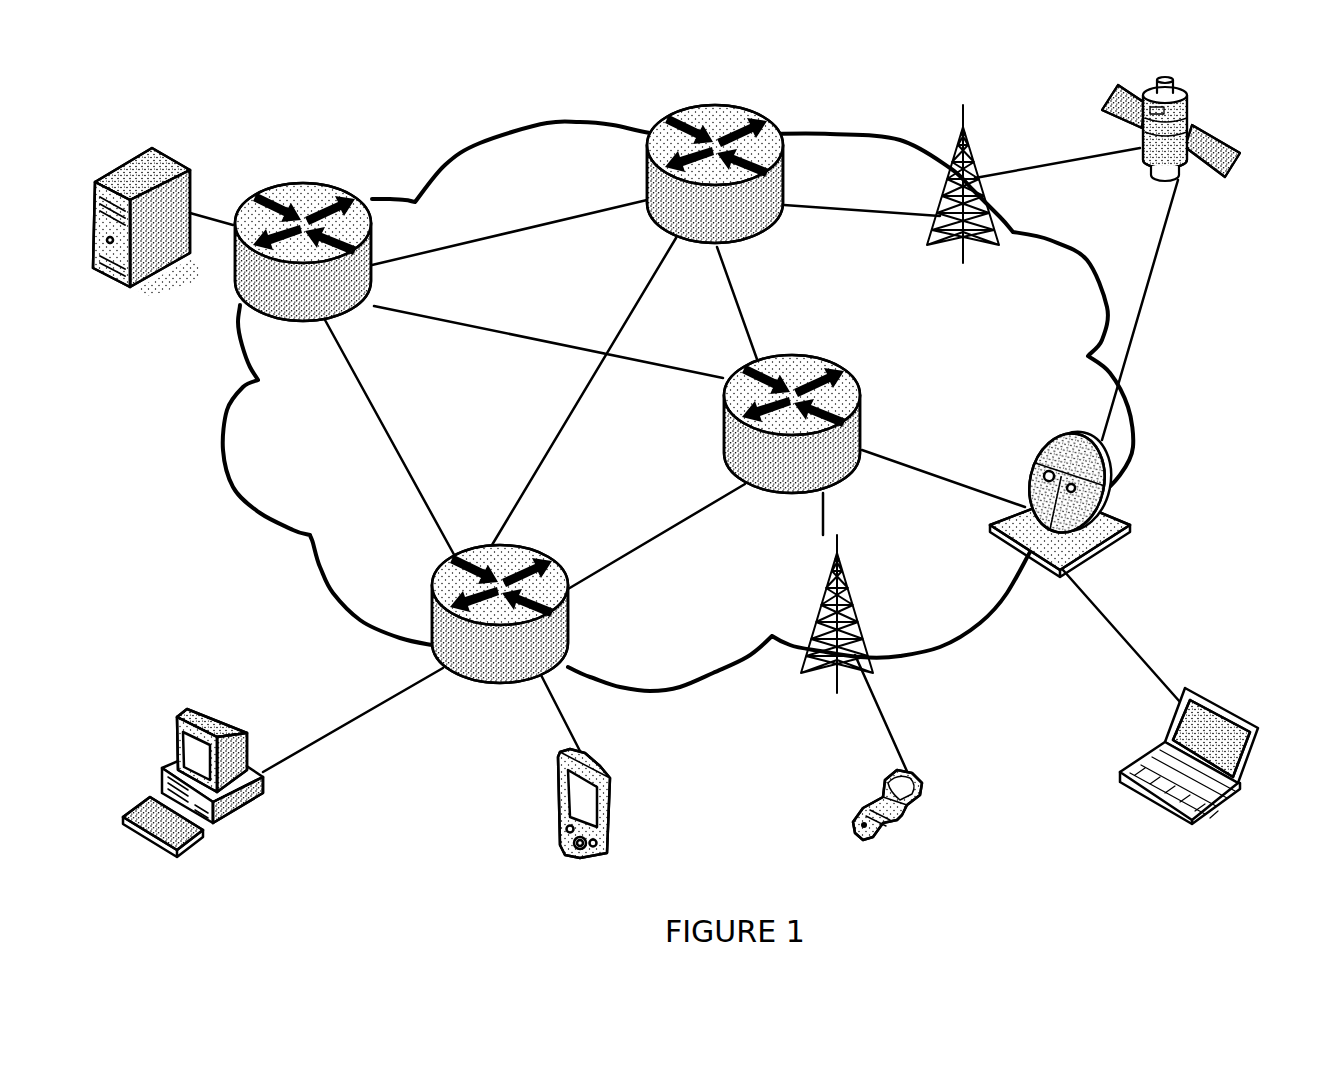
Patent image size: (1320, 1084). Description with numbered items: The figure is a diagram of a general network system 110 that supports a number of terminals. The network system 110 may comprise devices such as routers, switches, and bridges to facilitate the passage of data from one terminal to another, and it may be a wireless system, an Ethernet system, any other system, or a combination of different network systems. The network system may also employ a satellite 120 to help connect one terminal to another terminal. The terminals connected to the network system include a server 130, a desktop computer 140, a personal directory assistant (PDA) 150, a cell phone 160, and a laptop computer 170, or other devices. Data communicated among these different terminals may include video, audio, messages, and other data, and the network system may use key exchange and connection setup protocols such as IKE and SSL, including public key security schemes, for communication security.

The network system 110 is at (490, 135).
The satellite 120 is at (1185, 172).
The server 130 is at (175, 157).
The desktop computer 140 is at (215, 715).
The personal directory assistant (PDA) 150 is at (617, 822).
The cell phone 160 is at (903, 820).
The laptop computer 170 is at (1212, 702).